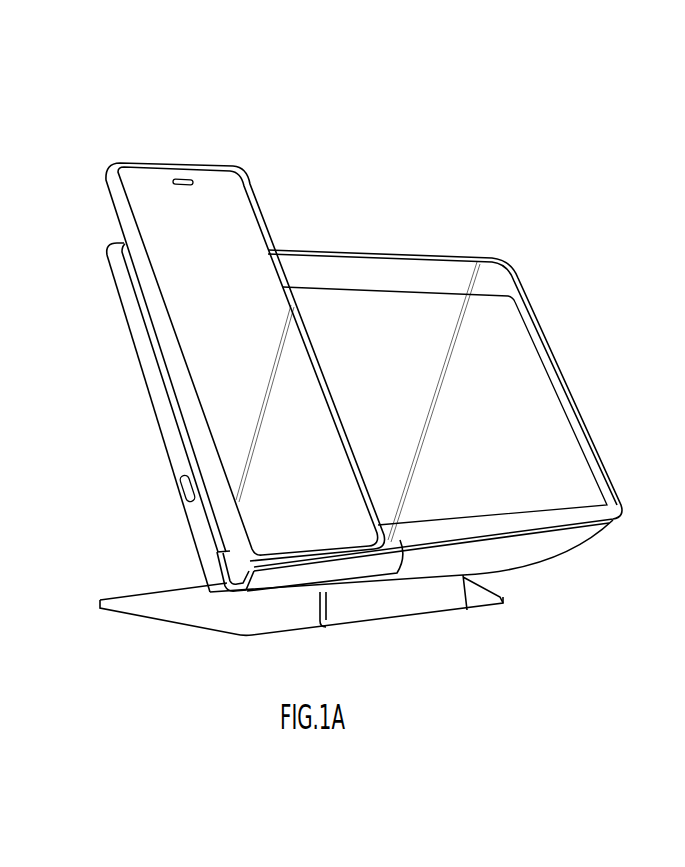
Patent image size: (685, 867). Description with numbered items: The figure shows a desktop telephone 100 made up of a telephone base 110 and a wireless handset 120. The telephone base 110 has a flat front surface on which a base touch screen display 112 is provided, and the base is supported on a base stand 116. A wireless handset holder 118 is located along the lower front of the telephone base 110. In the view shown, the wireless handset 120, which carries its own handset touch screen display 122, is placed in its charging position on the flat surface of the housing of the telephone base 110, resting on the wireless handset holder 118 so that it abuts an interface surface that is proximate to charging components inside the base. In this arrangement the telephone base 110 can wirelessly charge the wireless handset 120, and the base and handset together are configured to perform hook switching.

The desktop telephone 100 is at (380, 186).
The telephone base 110 is at (440, 273).
The base touch screen display 112 is at (517, 432).
The base stand 116 is at (161, 600).
The wireless handset holder 118 is at (365, 568).
The wireless handset 120 is at (176, 178).
The handset touch screen display 122 is at (225, 403).